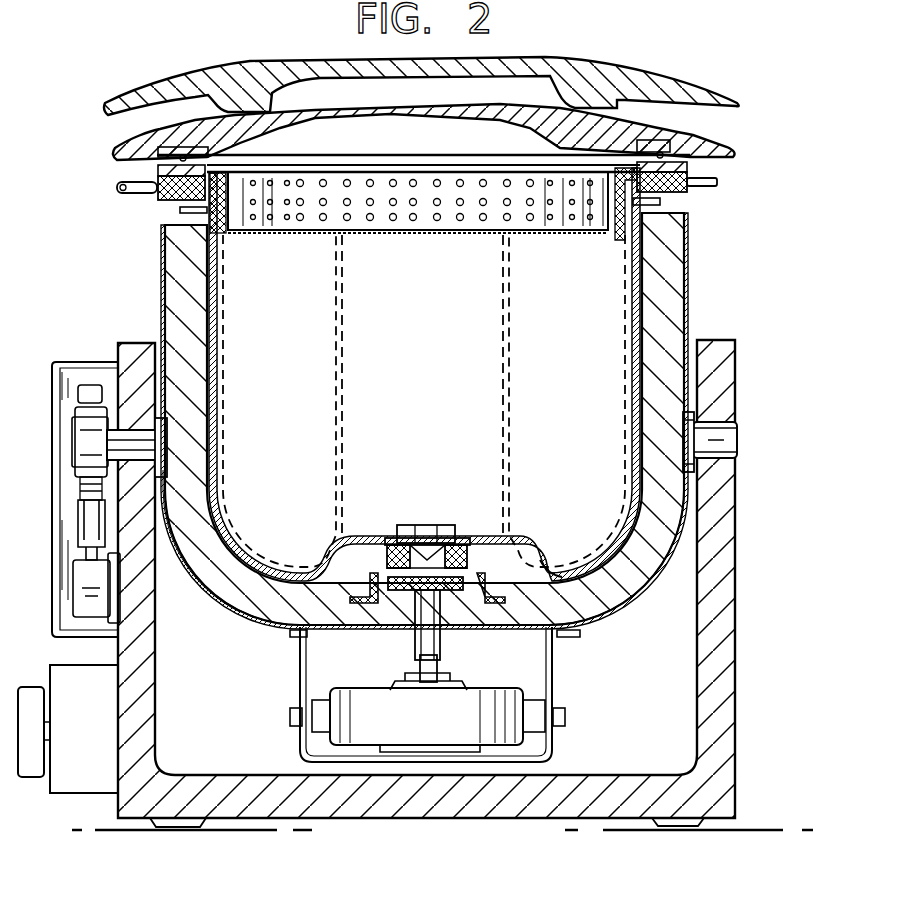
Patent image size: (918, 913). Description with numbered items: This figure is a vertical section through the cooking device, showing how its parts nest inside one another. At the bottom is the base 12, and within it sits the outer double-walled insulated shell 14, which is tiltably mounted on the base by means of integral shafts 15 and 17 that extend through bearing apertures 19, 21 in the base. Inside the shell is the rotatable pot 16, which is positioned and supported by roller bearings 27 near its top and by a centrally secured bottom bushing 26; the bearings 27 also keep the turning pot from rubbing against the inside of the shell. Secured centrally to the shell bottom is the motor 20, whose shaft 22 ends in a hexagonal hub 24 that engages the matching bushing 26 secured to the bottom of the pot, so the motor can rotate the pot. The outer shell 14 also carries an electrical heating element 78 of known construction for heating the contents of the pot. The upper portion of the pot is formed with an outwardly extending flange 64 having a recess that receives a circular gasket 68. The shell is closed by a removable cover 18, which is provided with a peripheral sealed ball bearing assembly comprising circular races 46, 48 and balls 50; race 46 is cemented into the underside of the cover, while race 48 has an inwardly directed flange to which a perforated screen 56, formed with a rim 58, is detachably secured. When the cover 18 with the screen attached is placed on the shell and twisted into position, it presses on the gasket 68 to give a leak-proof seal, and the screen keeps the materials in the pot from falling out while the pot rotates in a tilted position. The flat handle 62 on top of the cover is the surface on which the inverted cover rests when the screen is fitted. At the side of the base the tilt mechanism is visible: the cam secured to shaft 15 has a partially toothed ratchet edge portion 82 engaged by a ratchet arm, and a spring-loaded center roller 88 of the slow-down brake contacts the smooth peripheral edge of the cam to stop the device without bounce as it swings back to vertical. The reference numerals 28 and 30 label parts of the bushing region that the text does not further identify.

The base 12 is at (727, 722).
The outer double-walled insulated shell 14 is at (684, 284).
The integral shaft 15 is at (147, 444).
The rotatable pot 16 is at (618, 338).
The integral shaft 17 is at (727, 442).
The removable cover 18 is at (152, 123).
The bearing aperture 19 is at (160, 482).
The motor 20 is at (485, 700).
The bearing aperture 21 is at (732, 468).
The shaft 22 is at (418, 661).
The hexagonal hub 24 is at (390, 534).
The bushing 26 is at (477, 534).
The roller bearings 27 is at (180, 209).
The seal 28 is at (530, 556).
The nut 30 is at (410, 523).
The circular race 46 is at (160, 136).
The circular race 48 is at (690, 163).
The balls 50 is at (692, 133).
The perforated screen 56 is at (283, 237).
The rim 58 is at (233, 153).
The flat handle 62 is at (553, 58).
The outwardly extending flange 64 is at (714, 186).
The circular gasket 68 is at (157, 188).
The electrical heating element 78 is at (182, 278).
The partially toothed ratchet edge portion 82 is at (87, 430).
The spring-loaded center roller 88 is at (90, 517).